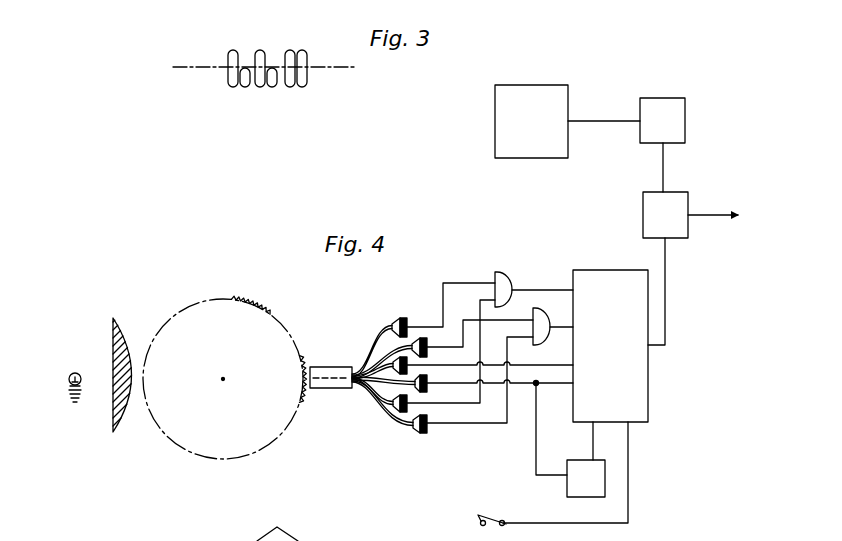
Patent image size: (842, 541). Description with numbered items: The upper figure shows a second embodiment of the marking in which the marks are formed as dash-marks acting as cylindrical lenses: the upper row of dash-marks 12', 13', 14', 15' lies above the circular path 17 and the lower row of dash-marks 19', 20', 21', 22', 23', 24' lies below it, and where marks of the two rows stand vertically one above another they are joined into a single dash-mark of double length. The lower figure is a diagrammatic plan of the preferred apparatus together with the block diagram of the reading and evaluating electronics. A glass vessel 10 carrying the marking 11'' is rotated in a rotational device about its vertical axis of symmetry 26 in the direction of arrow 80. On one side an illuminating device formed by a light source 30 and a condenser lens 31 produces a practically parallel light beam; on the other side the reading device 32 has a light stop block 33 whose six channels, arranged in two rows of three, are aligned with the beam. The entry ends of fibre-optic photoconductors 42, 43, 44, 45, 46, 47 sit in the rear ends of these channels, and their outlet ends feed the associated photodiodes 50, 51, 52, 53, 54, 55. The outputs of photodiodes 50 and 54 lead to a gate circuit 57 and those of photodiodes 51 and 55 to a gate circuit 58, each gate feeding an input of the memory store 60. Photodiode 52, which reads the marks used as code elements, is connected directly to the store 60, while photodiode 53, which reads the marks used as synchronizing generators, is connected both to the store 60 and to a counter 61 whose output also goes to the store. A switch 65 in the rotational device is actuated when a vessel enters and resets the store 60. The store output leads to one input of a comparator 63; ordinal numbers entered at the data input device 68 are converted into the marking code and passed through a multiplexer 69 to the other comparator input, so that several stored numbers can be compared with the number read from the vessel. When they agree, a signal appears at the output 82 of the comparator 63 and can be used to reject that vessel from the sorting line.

In FIG. 3, the circular path 17 is at (195, 67).
In FIG. 3, the dash-mark 12' is at (216, 53).
In FIG. 3, the dash-mark 13' is at (250, 53).
In FIG. 3, the dash-mark 14' is at (297, 53).
In FIG. 3, the dash-mark 15' is at (322, 57).
In FIG. 3, the dash-mark 19' is at (202, 82).
In FIG. 3, the dash-mark 20' is at (228, 93).
In FIG. 3, the dash-mark 21' is at (253, 103).
In FIG. 3, the dash-mark 22' is at (287, 93).
In FIG. 3, the dash-mark 23' is at (323, 97).
In FIG. 3, the dash-mark 24' is at (335, 80).
In FIG. 4, the glass vessel 10 is at (200, 450).
In FIG. 4, the marking 11'' is at (253, 285).
In FIG. 4, the vertical axis of symmetry 26 is at (222, 377).
In FIG. 4, the arrow 80 is at (247, 423).
In FIG. 4, the light source 30 is at (70, 374).
In FIG. 4, the condenser lens 31 is at (115, 333).
In FIG. 4, the light stop block 33 is at (320, 366).
In FIG. 4, the reading device 32 is at (375, 452).
In FIG. 4, the photoconductor 42 is at (385, 327).
In FIG. 4, the photoconductor 43 is at (374, 341).
In FIG. 4, the photoconductor 44 is at (368, 359).
In FIG. 4, the photoconductor 45 is at (368, 397).
In FIG. 4, the photoconductor 46 is at (383, 417).
In FIG. 4, the photoconductor 47 is at (400, 431).
In FIG. 4, the photodiode 50 is at (397, 317).
In FIG. 4, the photodiode 51 is at (416, 337).
In FIG. 4, the photodiode 52 is at (420, 364).
In FIG. 4, the photodiode 53 is at (430, 376).
In FIG. 4, the photodiode 54 is at (426, 407).
In FIG. 4, the photodiode 55 is at (431, 437).
In FIG. 4, the gate circuit 57 is at (508, 276).
In FIG. 4, the gate circuit 58 is at (546, 318).
In FIG. 4, the memory store 60 is at (603, 356).
In FIG. 4, the counter 61 is at (578, 491).
In FIG. 4, the comparator 63 is at (657, 226).
In FIG. 4, the data input device 68 is at (522, 133).
In FIG. 4, the multiplexer 69 is at (653, 133).
In FIG. 4, the output 82 is at (705, 214).
In FIG. 4, the switch 65 is at (477, 517).